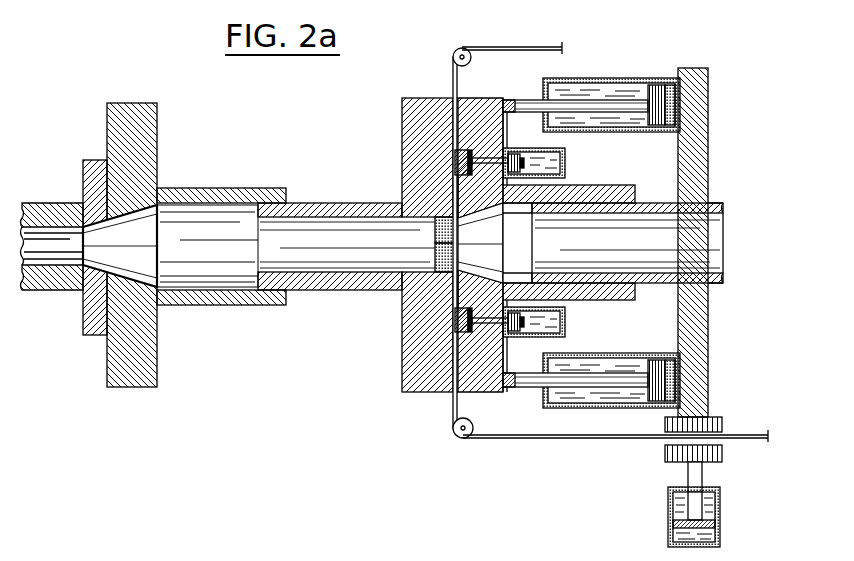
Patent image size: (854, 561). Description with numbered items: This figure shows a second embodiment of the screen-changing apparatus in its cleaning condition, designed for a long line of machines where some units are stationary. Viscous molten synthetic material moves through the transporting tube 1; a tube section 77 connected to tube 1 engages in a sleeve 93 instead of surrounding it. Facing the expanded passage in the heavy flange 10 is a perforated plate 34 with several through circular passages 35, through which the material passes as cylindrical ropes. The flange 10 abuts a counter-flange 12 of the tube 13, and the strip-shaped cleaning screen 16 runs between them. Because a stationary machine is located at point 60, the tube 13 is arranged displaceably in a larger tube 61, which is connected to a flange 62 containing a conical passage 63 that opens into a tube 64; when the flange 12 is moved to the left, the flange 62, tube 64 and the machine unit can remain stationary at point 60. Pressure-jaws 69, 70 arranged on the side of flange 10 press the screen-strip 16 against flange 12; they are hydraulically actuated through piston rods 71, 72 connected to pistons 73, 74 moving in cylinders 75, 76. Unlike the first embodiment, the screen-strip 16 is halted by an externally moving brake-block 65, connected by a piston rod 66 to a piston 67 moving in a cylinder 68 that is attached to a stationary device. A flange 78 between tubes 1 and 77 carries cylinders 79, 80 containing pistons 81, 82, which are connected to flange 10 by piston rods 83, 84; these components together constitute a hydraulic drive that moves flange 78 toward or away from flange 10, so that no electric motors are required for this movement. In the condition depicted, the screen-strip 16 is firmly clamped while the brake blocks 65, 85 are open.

The transporting tube 1 is at (712, 202).
The flange 10 is at (483, 98).
The counter-flange 12 is at (402, 101).
The tube 13 is at (320, 203).
The cleaning screen 16 is at (508, 45).
The perforated plate 34 is at (432, 251).
The circular passages 35 is at (433, 225).
The point of stationary machine 60 is at (34, 164).
The larger tube 61 is at (228, 190).
The flange 62 is at (150, 127).
The conical passage 63 is at (160, 217).
The tube 64 is at (53, 205).
The brake-block 65 is at (725, 453).
The piston rod 66 is at (688, 480).
The piston 67 is at (668, 530).
The cylinder 68 is at (668, 506).
The pressure-jaw 69 is at (452, 162).
The pressure-jaw 70 is at (452, 323).
The piston rod 71 is at (468, 188).
The piston rod 72 is at (450, 350).
The piston 73 is at (520, 150).
The piston 74 is at (522, 337).
The cylinder 75 is at (565, 160).
The cylinder 76 is at (568, 322).
The tube section 77 is at (650, 203).
The flange 78 is at (700, 147).
The cylinder 79 is at (612, 78).
The cylinder 80 is at (600, 410).
The piston 81 is at (660, 102).
The piston 82 is at (668, 373).
The piston rod 83 is at (522, 98).
The piston rod 84 is at (620, 378).
The brake block 85 is at (725, 424).
The sleeve 93 is at (613, 185).